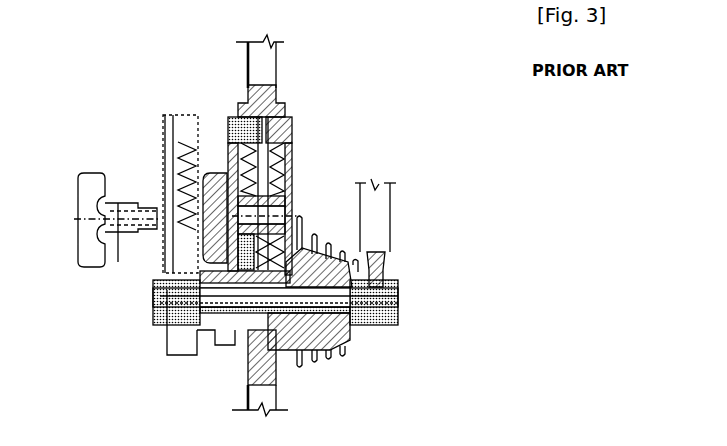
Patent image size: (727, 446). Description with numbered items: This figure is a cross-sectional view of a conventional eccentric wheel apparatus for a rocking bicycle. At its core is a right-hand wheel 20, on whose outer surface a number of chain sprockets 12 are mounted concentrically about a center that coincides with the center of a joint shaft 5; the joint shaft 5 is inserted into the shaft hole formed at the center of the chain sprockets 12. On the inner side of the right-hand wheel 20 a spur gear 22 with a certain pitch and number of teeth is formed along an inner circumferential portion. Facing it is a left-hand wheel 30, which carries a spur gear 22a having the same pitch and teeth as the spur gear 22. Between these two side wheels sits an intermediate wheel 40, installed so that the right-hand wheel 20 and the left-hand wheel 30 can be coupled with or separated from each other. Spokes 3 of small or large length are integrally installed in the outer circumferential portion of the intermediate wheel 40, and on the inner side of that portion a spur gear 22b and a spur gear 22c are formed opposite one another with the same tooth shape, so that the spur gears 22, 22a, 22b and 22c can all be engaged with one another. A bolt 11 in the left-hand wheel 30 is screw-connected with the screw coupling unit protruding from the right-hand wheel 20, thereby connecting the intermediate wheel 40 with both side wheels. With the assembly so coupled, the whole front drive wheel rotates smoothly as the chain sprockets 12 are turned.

The spokes 3 is at (268, 70).
The spur gear 22 is at (276, 100).
The right-hand wheel 20 is at (292, 124).
The spur gear 22b is at (292, 155).
The spur gear 22c is at (293, 186).
The spur gear 22a is at (170, 172).
The left-hand wheel 30 is at (232, 126).
The bolt 11 is at (118, 262).
The joint shaft 5 is at (218, 332).
The intermediate wheel 40 is at (226, 356).
The chain sprockets 12 is at (360, 340).